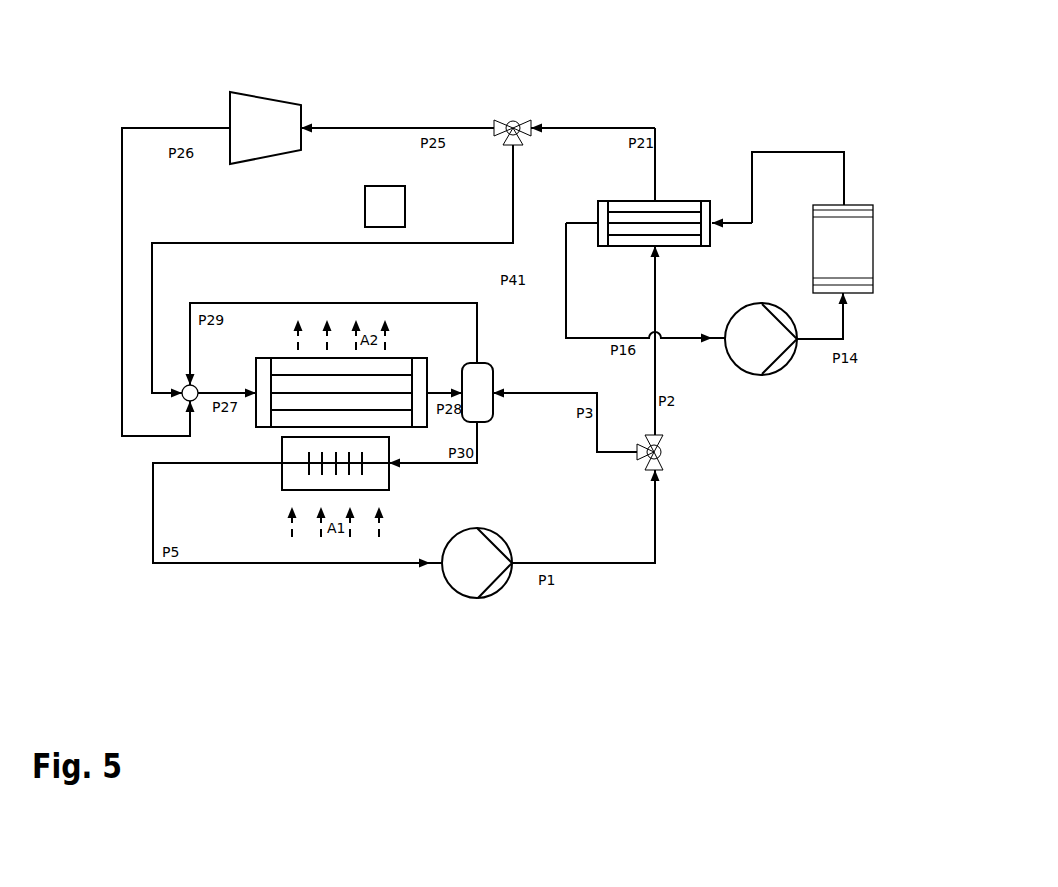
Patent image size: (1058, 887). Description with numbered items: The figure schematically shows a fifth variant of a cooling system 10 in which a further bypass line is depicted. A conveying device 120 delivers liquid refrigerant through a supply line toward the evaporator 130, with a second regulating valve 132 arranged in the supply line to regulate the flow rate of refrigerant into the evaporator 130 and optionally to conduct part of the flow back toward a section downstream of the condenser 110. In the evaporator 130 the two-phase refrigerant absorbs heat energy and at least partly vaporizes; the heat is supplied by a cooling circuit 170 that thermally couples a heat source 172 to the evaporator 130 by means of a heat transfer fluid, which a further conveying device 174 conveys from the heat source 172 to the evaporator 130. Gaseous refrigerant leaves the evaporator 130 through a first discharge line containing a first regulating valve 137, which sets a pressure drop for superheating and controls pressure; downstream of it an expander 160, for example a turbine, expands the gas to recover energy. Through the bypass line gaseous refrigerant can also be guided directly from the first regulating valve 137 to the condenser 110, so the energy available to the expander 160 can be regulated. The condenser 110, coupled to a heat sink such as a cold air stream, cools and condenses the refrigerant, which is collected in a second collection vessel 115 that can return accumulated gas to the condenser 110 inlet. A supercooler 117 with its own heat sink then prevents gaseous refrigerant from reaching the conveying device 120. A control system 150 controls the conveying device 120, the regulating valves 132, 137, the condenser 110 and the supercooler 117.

The cooling system 10 is at (120, 64).
The condenser 110 is at (287, 417).
The second collection vessel 115 is at (483, 412).
The supercooler 117 is at (310, 462).
The conveying device 120 is at (478, 567).
The evaporator 130 is at (650, 227).
The second regulating valve 132 is at (668, 463).
The first regulating valve 137 is at (533, 107).
The control system 150 is at (375, 212).
The expander 160 is at (277, 120).
The cooling circuit 170 is at (825, 133).
The heat source 172 is at (858, 248).
The further conveying device 174 is at (757, 348).